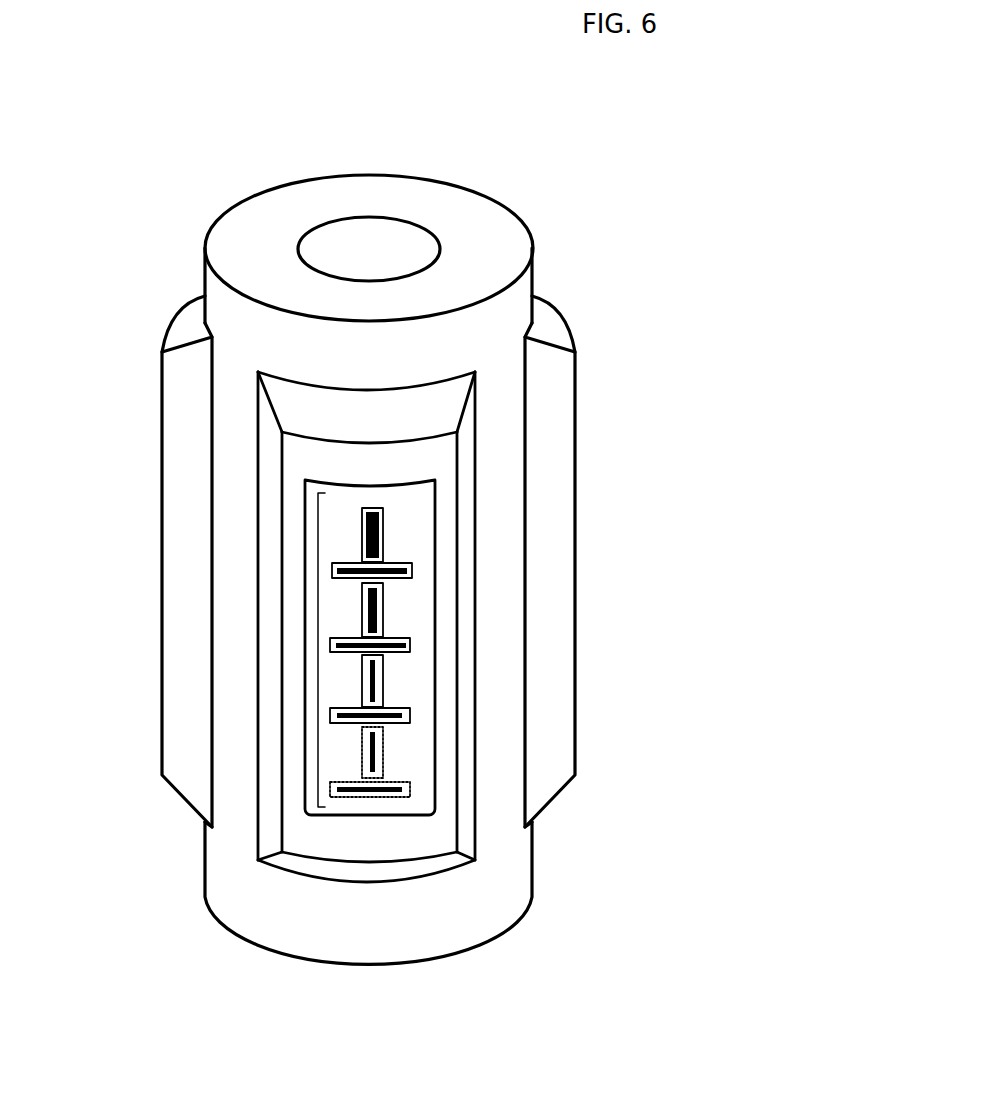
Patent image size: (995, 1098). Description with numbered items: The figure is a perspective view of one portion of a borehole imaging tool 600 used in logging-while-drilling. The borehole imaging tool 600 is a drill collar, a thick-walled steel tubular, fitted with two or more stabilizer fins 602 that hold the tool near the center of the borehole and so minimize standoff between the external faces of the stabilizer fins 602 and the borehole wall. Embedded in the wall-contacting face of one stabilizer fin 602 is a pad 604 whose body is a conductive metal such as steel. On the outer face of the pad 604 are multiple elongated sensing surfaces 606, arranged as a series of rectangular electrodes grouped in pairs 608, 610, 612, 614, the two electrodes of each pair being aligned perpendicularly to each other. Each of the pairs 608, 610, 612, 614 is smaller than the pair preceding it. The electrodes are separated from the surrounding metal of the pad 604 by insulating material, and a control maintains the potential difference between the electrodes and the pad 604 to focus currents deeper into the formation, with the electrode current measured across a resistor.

The borehole imaging tool 600 is at (158, 224).
The stabilizer fin 602 is at (183, 333).
The pad 604 is at (316, 496).
The elongated sensing surfaces 606 is at (354, 652).
The first pair of electrodes 608 is at (417, 510).
The second pair of electrodes 610 is at (417, 583).
The third pair of electrodes 612 is at (417, 660).
The fourth pair of electrodes 614 is at (417, 730).